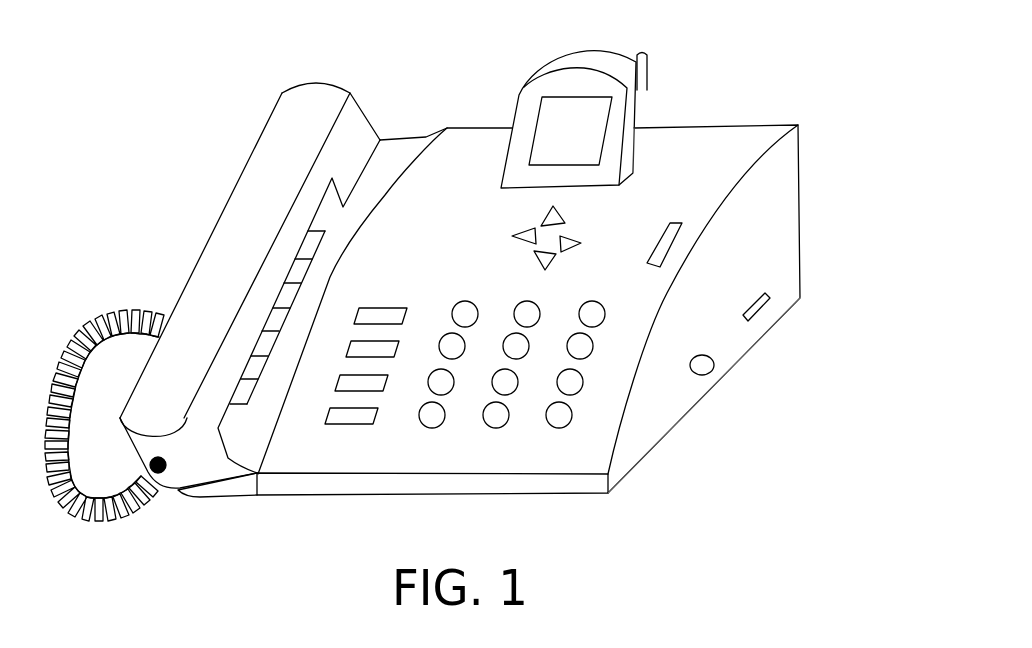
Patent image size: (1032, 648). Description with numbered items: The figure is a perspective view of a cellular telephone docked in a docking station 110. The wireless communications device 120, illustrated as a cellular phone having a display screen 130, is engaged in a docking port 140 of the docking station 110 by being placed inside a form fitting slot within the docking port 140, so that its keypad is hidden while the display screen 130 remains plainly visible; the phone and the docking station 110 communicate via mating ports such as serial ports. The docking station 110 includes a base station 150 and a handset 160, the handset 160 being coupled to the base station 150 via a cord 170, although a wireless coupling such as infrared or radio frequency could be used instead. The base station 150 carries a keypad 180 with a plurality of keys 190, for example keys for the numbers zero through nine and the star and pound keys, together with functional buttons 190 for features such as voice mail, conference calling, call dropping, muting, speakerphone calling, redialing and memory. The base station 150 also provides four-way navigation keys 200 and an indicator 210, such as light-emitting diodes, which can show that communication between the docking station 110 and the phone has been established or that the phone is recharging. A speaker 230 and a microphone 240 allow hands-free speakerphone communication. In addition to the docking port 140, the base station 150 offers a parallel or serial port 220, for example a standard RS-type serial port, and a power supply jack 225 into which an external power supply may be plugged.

The docking station 110 is at (820, 175).
The wireless communications device 120 is at (607, 62).
The display screen 130 is at (567, 120).
The docking port 140 is at (637, 162).
The base station 150 is at (781, 258).
The handset 160 is at (302, 102).
The cord 170 is at (155, 507).
The keypad 180 is at (488, 429).
The keys 190 is at (567, 378).
The navigation keys 200 is at (567, 238).
The indicator 210 is at (677, 233).
The serial port 220 is at (766, 309).
The power supply jack 225 is at (714, 367).
The speaker 230 is at (285, 298).
The microphone 240 is at (230, 307).